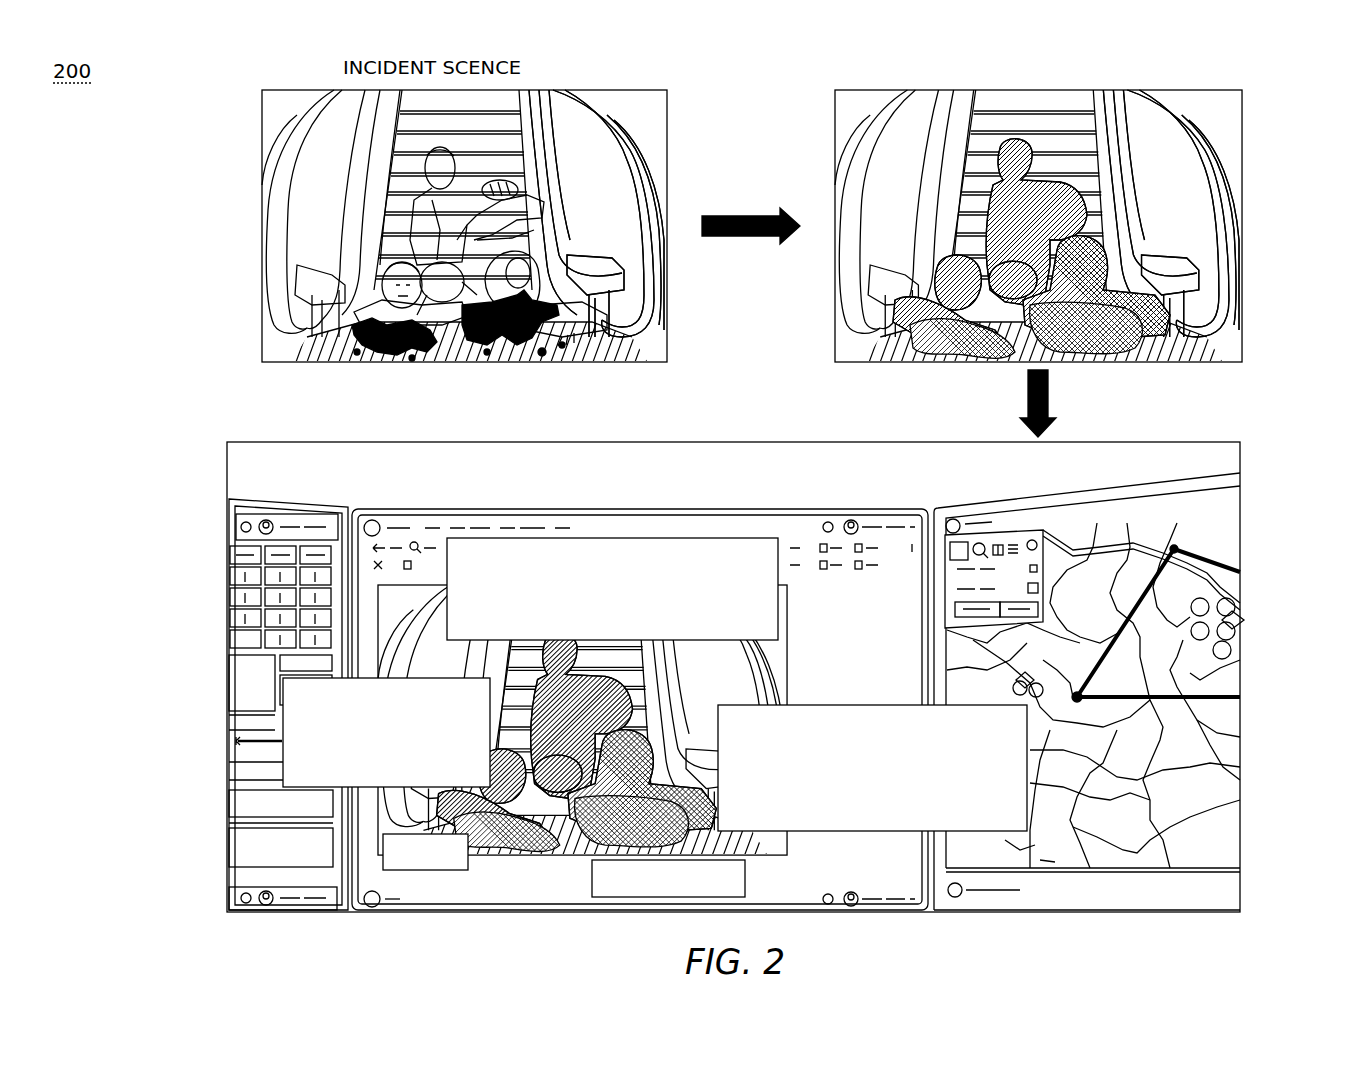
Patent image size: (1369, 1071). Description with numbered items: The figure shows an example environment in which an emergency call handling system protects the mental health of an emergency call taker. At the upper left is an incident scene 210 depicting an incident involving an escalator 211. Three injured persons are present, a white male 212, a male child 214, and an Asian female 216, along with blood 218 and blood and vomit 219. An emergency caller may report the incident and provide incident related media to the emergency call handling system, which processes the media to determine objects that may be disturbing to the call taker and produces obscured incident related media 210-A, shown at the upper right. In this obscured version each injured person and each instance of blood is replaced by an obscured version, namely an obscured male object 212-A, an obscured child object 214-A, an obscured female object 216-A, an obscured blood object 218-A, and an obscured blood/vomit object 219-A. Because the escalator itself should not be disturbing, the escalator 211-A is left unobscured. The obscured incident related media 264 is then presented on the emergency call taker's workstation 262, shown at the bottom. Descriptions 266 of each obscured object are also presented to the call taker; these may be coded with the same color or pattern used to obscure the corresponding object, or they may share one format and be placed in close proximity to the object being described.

The incident scene 210 is at (667, 108).
The escalator 211 is at (640, 150).
The white male 212 is at (430, 160).
The male child 214 is at (400, 290).
The Asian female 216 is at (540, 250).
The blood and vomit 219 is at (537, 293).
The blood 218 is at (366, 352).
The obscured incident related media 210-A is at (1242, 110).
The escalator 211-A is at (1215, 162).
The obscured male object 212-A is at (1005, 160).
The obscured child object 214-A is at (960, 268).
The obscured female object 216-A is at (1108, 245).
The obscured blood/vomit object 219-A is at (1113, 293).
The obscured blood object 218-A is at (945, 352).
The emergency call taker's workstation 262 is at (1130, 442).
The obscured incident related media 264 is at (742, 508).
The descriptions 266 is at (705, 538).